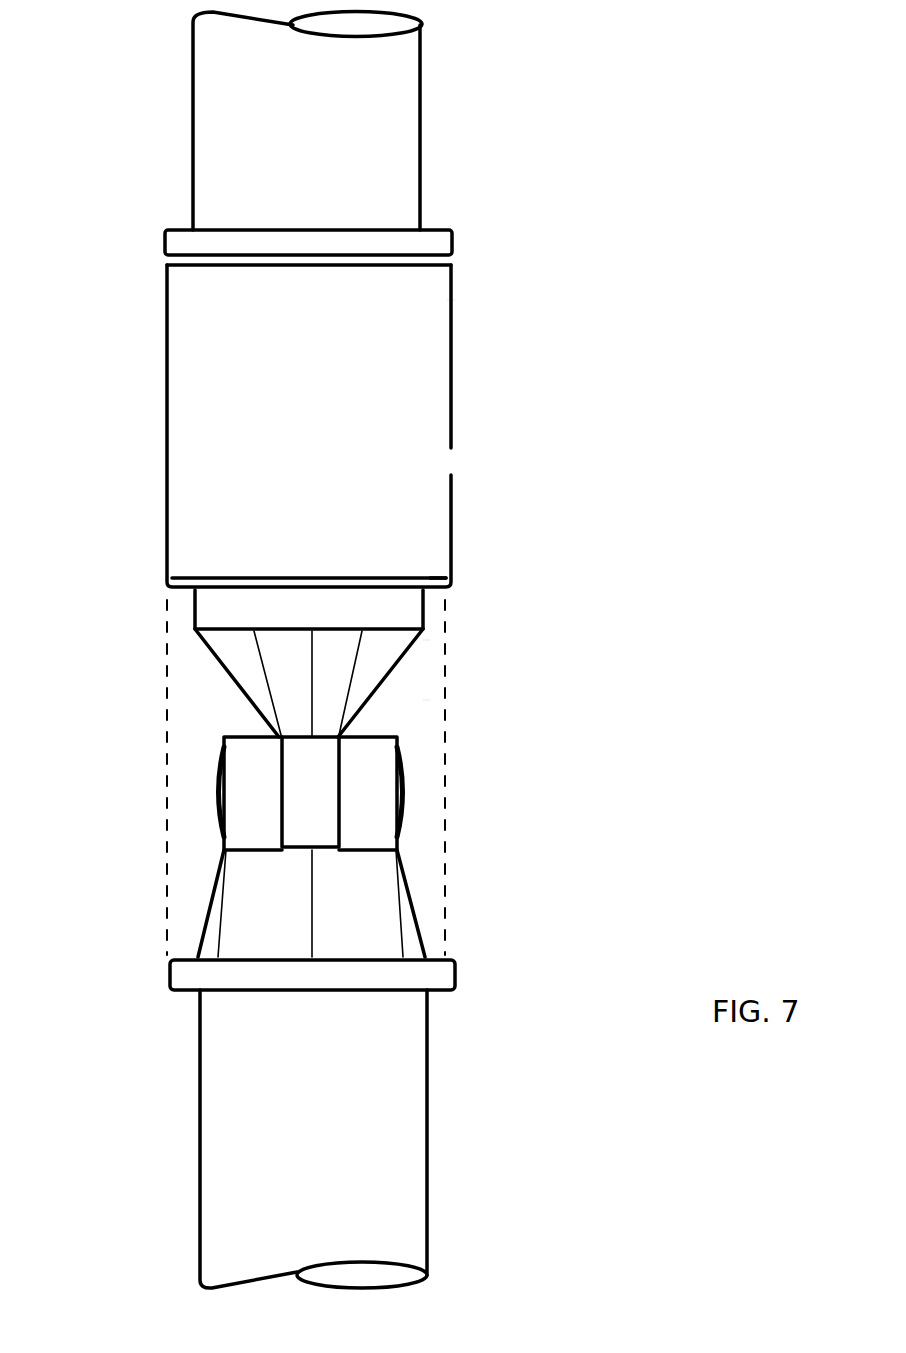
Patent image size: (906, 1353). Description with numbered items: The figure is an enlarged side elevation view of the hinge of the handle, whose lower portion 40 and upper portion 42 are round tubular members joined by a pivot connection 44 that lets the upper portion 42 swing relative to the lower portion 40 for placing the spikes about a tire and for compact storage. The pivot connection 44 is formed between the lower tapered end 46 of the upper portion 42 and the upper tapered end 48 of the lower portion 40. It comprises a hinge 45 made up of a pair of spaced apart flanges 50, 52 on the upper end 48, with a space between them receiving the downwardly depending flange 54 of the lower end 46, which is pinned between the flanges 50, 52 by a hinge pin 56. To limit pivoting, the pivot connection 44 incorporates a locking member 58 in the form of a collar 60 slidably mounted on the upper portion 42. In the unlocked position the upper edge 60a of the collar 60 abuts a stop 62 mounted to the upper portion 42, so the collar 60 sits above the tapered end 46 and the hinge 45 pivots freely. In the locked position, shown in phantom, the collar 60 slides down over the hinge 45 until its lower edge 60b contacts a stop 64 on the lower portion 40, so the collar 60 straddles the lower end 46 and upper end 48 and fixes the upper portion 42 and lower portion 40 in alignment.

The lower portion 40 is at (393, 1157).
The upper portion 42 is at (415, 168).
The pivot connection 44 is at (598, 724).
The hinge 45 is at (615, 670).
The lower tapered end 46 is at (420, 653).
The upper tapered end 48 is at (440, 914).
The flange 50 is at (238, 748).
The flange 52 is at (377, 752).
The downwardly depending flange 54 is at (343, 809).
The hinge pin 56 is at (217, 805).
The locking member 58 is at (478, 377).
The collar 60 is at (418, 427).
The upper edge 60a is at (165, 257).
The lower edge 60b is at (438, 587).
The stop 62 is at (450, 228).
The stop 64 is at (170, 977).